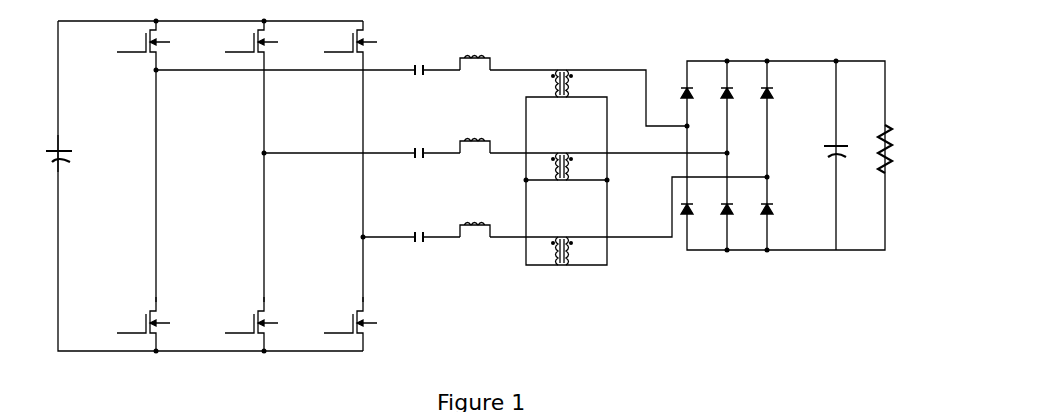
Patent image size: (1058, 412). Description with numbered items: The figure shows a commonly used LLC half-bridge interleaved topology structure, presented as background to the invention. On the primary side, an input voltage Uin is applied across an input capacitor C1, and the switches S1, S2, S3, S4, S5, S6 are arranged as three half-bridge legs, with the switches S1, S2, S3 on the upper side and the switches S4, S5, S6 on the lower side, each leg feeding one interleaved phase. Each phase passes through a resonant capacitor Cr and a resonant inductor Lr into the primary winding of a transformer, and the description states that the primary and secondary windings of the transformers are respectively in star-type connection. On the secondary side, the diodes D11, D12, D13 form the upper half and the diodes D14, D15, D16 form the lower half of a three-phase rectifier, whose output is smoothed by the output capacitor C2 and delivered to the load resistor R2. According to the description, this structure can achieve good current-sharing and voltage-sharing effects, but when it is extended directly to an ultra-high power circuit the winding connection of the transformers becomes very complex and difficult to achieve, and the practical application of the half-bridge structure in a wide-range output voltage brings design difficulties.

The switch S1 is at (143, 45).
The switch S2 is at (250, 45).
The switch S3 is at (338, 45).
The switch S4 is at (139, 324).
The switch S5 is at (245, 324).
The switch S6 is at (348, 324).
The input voltage Uin is at (37, 149).
The input capacitor C1 is at (70, 170).
The resonant capacitor Cr is at (416, 142).
The resonant inductor Lr is at (475, 138).
The rectifier diode D11 is at (698, 94).
The rectifier diode D12 is at (738, 94).
The rectifier diode D13 is at (779, 93).
The rectifier diode D14 is at (698, 210).
The rectifier diode D15 is at (739, 210).
The rectifier diode D16 is at (782, 211).
The output capacitor C2 is at (845, 140).
The load resistor R2 is at (904, 149).